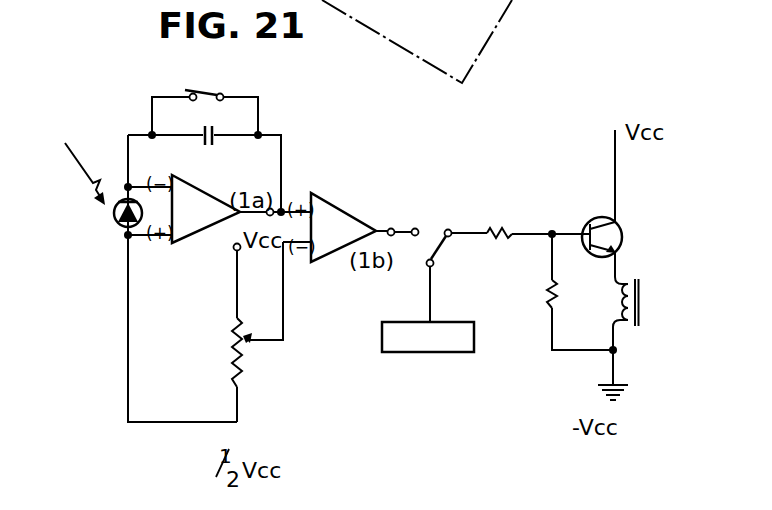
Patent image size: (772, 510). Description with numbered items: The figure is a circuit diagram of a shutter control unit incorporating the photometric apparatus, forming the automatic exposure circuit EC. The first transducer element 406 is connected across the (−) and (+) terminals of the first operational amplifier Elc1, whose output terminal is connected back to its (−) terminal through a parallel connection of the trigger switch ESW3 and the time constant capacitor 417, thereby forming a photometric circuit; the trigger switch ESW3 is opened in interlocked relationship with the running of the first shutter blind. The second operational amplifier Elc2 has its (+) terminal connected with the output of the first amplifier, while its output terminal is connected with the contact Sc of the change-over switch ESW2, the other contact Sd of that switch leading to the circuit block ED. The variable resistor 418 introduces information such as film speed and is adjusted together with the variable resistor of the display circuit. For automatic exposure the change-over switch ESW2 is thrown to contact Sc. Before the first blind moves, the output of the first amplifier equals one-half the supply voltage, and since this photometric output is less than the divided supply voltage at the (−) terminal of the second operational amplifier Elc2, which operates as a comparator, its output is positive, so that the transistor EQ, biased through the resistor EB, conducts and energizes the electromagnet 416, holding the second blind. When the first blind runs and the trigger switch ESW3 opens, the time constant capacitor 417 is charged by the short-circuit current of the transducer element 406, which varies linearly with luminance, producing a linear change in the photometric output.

The first transducer element 406 is at (116, 218).
The time constant capacitor 417 is at (208, 148).
The variable resistor 418 is at (231, 358).
The electromagnet 416 is at (641, 295).
The trigger switch ESW3 is at (201, 94).
The change-over switch ESW2 is at (433, 237).
The contact Sc is at (416, 228).
The contact Sd is at (434, 266).
The circuit block ED is at (428, 362).
The resistor EB is at (540, 361).
The transistor EQ is at (586, 225).
The automatic exposure circuit EC is at (287, 175).
The first operational amplifier Elc1 is at (176, 246).
The second operational amplifier Elc2 is at (332, 265).